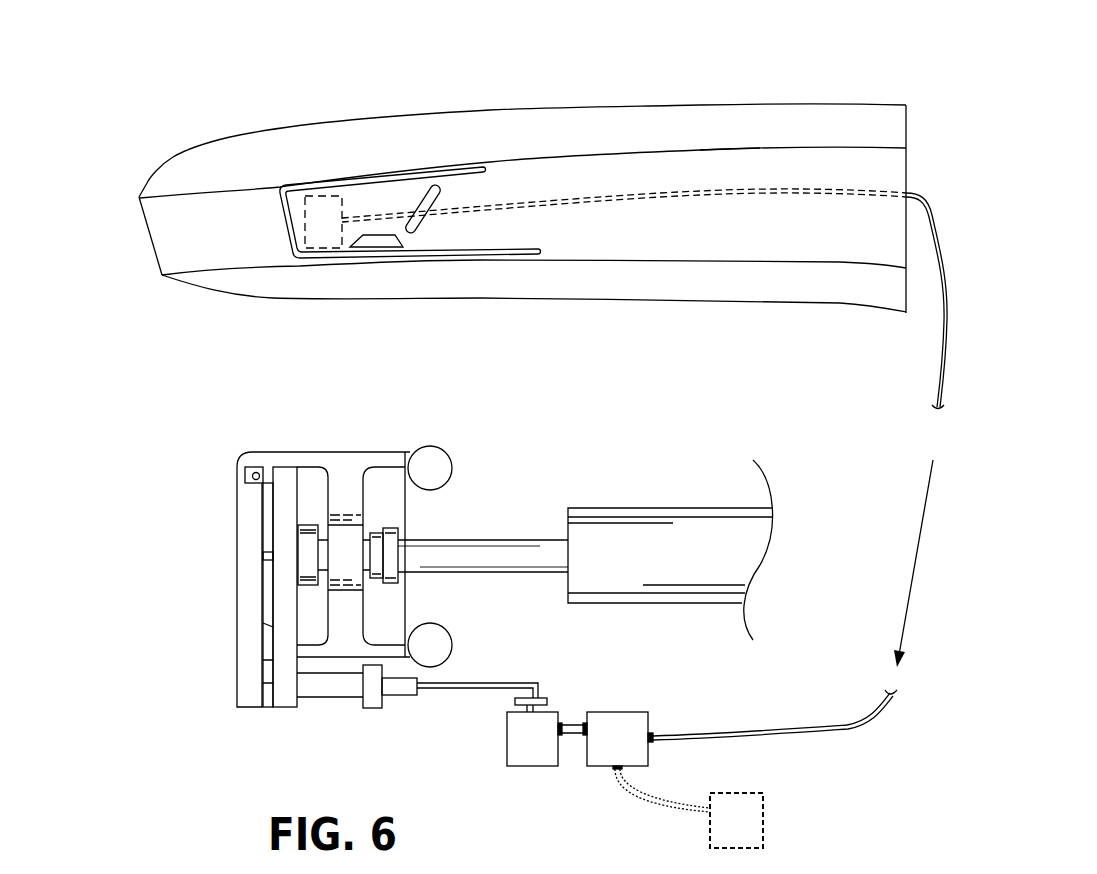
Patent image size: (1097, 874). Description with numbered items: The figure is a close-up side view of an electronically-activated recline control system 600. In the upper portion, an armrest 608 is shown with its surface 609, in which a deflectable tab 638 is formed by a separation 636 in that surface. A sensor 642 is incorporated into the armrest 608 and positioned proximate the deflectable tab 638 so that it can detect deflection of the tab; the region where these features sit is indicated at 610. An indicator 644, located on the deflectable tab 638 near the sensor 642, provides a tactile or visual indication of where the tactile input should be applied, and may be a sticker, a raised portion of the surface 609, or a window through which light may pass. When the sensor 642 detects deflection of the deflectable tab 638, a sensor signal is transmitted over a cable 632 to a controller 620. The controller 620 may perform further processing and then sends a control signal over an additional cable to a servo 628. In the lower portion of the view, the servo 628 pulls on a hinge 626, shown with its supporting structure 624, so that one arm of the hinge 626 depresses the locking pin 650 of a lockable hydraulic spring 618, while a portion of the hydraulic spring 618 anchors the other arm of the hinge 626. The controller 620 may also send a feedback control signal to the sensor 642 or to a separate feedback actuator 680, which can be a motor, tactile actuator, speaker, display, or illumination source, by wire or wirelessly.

The electronically-activated recline control system 600 is at (100, 101).
The armrest 608 is at (150, 258).
The surface 609 is at (852, 246).
The receptacle region 610 is at (251, 206).
The lockable hydraulic spring 618 is at (630, 507).
The controller 620 is at (617, 712).
The mounting frame 624 is at (357, 452).
The hinge 626 is at (237, 597).
The servo 628 is at (505, 737).
The cable 632 is at (720, 193).
The separation 636 is at (280, 229).
The deflectable tab 638 is at (292, 198).
The sensor 642 is at (343, 206).
The indicator 644 is at (436, 229).
The locking pin 650 is at (268, 547).
The feedback actuator 680 is at (763, 822).